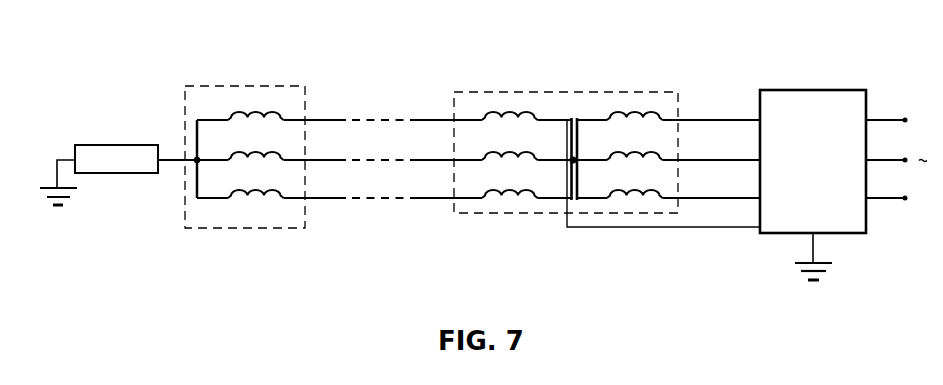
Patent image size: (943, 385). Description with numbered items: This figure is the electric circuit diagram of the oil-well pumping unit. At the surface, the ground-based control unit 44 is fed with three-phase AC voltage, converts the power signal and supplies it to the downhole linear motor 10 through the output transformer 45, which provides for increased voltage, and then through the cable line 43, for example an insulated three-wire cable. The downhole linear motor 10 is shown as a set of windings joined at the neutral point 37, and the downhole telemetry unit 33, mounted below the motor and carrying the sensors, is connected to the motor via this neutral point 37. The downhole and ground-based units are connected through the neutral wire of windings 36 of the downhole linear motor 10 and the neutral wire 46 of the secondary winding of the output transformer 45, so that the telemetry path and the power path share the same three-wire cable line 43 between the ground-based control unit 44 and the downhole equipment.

The downhole telemetry unit 33 is at (107, 160).
The neutral wire of windings 36 is at (172, 160).
The neutral point 37 is at (195, 158).
The downhole linear motor 10 is at (293, 97).
The cable line 43 is at (383, 120).
The neutral wire of the output transformer secondary winding 46 is at (572, 158).
The output transformer 45 is at (578, 101).
The ground-based control unit 44 is at (795, 121).